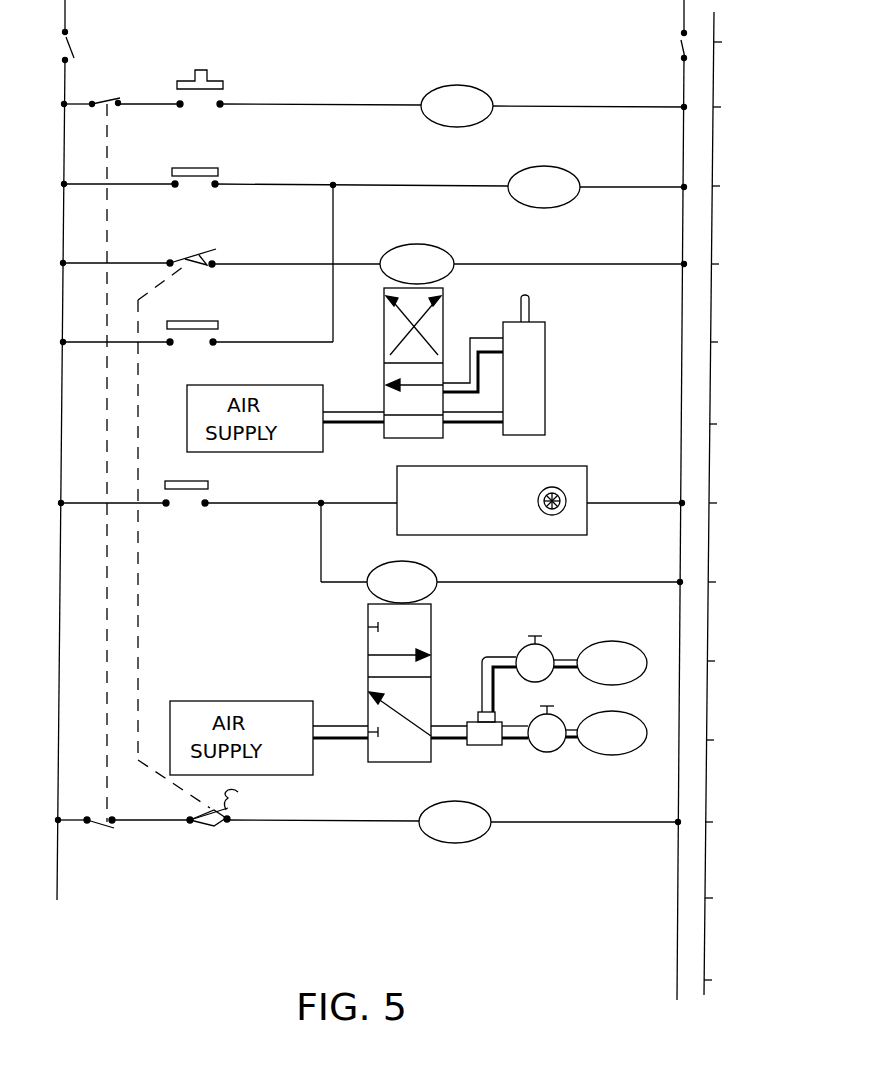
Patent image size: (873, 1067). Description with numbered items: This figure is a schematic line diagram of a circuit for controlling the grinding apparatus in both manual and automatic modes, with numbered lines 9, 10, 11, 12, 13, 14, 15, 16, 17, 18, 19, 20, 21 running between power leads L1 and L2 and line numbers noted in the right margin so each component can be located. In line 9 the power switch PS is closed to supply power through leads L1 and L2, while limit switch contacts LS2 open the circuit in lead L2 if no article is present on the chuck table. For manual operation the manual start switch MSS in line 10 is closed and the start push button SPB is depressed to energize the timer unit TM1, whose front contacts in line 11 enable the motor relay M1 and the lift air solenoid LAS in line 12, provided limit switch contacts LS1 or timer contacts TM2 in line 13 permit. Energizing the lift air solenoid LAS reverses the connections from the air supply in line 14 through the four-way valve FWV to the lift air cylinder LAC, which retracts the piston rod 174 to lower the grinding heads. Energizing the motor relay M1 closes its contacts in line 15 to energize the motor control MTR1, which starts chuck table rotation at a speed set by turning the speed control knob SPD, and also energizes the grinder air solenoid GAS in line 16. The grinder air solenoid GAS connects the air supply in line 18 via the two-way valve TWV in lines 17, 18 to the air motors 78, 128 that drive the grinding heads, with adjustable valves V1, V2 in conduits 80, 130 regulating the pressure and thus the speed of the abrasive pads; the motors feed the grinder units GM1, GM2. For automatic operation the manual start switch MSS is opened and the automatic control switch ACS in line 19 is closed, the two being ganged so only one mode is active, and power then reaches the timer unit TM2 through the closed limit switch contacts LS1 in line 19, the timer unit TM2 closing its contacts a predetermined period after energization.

The power lead L1 is at (66, 22).
The power lead L2 is at (682, 24).
The power switch PS is at (72, 50).
The limit switch contacts LS2 is at (680, 48).
The manual start switch MSS is at (104, 96).
The start push button SPB is at (208, 80).
The timer unit TM1 is at (429, 130).
The timer unit TM2 is at (424, 571).
The motor relay M1 is at (426, 327).
The limit switch contacts LS1 is at (184, 255).
The lift air solenoid LAS is at (449, 264).
The four-way valve FWV is at (444, 300).
The lift air cylinder LAC is at (546, 372).
The piston rod 174 is at (530, 306).
The motor control MTR1 is at (545, 466).
The speed control knob SPD is at (566, 508).
The grinder air solenoid GAS is at (502, 582).
The two-way valve TWV is at (366, 640).
The conduit 130 is at (506, 636).
The conduit 80 is at (522, 746).
The air motor 128 is at (638, 640).
The air motor 78 is at (636, 752).
The adjustable valve V1 is at (547, 729).
The adjustable valve V2 is at (535, 659).
The gas manifold 1 GM1 is at (606, 733).
The gas manifold 2 GM2 is at (600, 663).
The automatic control switch ACS is at (104, 826).
The line 9 is at (725, 41).
The line 10 is at (766, 106).
The line 11 is at (762, 185).
The line 12 is at (728, 263).
The line 13 is at (727, 341).
The line 14 is at (726, 423).
The line 15 is at (726, 502).
The line 16 is at (725, 581).
The line 17 is at (724, 660).
The line 18 is at (723, 739).
The line 19 is at (758, 821).
The line 20 is at (722, 897).
The line 21 is at (721, 979).